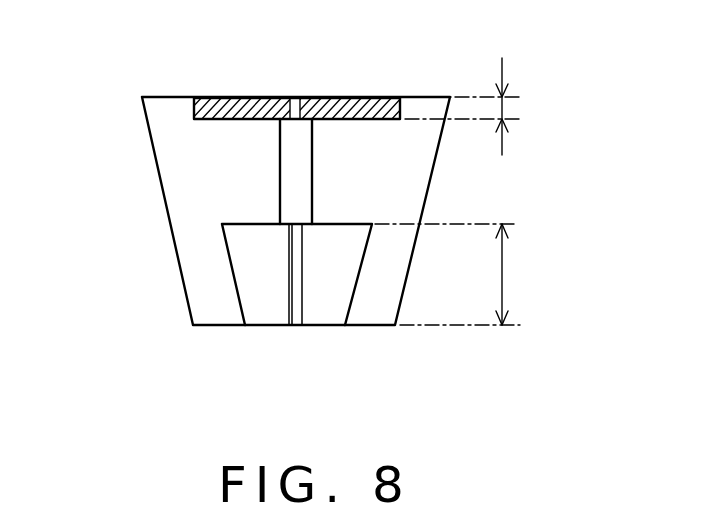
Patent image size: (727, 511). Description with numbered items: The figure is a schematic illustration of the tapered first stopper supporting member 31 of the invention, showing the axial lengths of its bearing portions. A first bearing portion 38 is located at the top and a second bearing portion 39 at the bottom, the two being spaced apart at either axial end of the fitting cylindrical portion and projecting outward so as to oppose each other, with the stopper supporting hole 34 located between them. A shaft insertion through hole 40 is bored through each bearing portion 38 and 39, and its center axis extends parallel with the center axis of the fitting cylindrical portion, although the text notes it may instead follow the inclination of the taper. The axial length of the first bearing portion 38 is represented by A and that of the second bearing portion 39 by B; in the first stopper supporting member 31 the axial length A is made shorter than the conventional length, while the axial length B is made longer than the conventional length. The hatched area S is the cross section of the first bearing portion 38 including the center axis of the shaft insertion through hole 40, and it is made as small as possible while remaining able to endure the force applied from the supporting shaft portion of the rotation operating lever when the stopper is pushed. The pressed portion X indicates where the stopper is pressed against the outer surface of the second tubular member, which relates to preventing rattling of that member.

The first stopper supporting member 31 is at (186, 327).
The first bearing portion 38 is at (196, 108).
The shaft insertion through hole 40 is at (281, 125).
The stopper supporting hole 34 is at (280, 173).
The second bearing portion 39 is at (228, 255).
The area of the cross section of the first bearing portion S is at (317, 97).
The pressed portion X is at (313, 153).
The axial length of the first bearing portion A is at (478, 106).
The axial length of the second bearing portion B is at (457, 274).